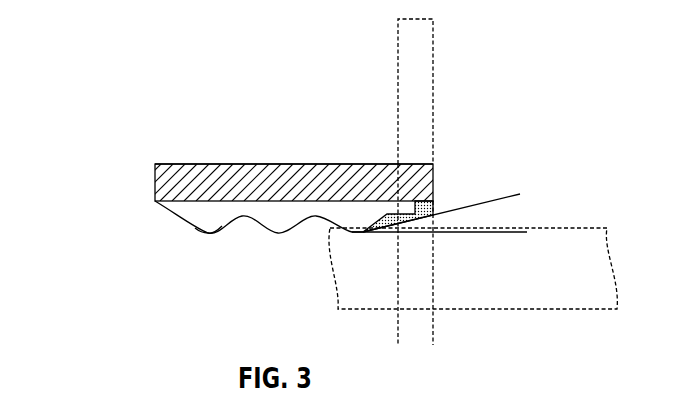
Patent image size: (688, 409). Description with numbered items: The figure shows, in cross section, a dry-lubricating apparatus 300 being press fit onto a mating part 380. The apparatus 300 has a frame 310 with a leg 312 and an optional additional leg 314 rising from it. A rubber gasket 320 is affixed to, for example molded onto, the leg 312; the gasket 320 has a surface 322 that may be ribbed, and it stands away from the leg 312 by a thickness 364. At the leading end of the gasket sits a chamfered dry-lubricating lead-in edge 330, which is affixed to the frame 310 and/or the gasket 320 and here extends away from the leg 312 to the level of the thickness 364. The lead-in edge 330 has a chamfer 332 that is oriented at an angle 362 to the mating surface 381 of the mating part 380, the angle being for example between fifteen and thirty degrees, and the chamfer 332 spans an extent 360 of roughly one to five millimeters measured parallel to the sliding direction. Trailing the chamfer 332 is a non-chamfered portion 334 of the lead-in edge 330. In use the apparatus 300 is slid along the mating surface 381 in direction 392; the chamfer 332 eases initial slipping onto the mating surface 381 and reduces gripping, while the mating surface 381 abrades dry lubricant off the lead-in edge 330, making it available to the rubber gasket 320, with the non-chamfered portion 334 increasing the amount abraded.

The dry-lubricating apparatus 300 is at (137, 31).
The frame 310 is at (245, 172).
The leg 312 is at (294, 125).
The additional leg 314 is at (459, 182).
The rubber gasket 320 is at (259, 256).
The surface 322 is at (197, 270).
The chamfered dry-lubricating lead-in edge 330 is at (422, 189).
The chamfer 332 is at (441, 245).
The non-chamfered portion 334 is at (438, 268).
The extent 360 is at (530, 333).
The angle 362 is at (560, 210).
The thickness 364 is at (278, 315).
The mating part 380 is at (473, 268).
The mating surface 381 is at (332, 170).
The direction 392 is at (580, 170).